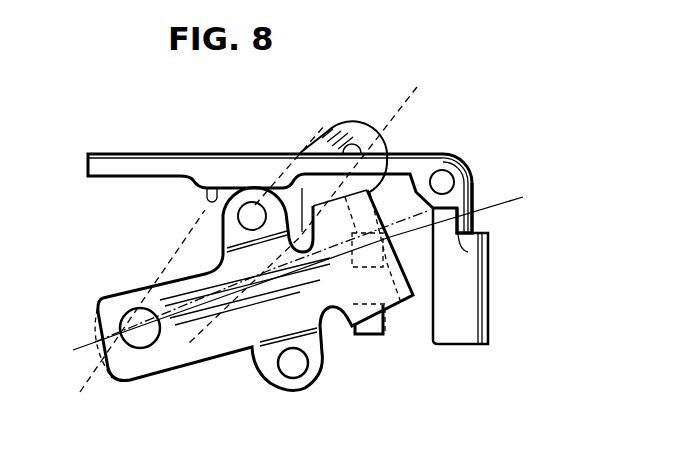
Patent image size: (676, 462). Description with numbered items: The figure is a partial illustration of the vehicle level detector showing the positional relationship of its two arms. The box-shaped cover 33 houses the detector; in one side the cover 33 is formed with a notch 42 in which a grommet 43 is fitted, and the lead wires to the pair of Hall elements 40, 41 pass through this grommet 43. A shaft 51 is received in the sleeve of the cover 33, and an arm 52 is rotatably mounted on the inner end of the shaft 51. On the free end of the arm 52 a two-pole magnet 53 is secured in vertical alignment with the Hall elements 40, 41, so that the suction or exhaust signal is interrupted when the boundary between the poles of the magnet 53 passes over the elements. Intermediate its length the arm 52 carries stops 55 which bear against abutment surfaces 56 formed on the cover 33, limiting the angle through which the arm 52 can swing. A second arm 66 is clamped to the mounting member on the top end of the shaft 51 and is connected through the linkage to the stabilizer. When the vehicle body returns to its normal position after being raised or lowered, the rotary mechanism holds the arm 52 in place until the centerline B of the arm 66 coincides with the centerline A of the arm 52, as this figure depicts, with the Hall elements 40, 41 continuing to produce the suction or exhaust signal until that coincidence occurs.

The cover 33 is at (238, 160).
The abutment surfaces 56 is at (213, 200).
The arm 66 is at (385, 137).
The Hall element 40 is at (477, 194).
The notch 42 is at (468, 252).
The grommet 43 is at (463, 290).
The arm 52 is at (257, 330).
The shaft 51 is at (147, 340).
The stops 55 is at (303, 383).
The magnet 53 is at (400, 303).
The Hall element 41 is at (368, 332).
The centerline of the arm A is at (497, 207).
The centerline of the arm B is at (392, 112).